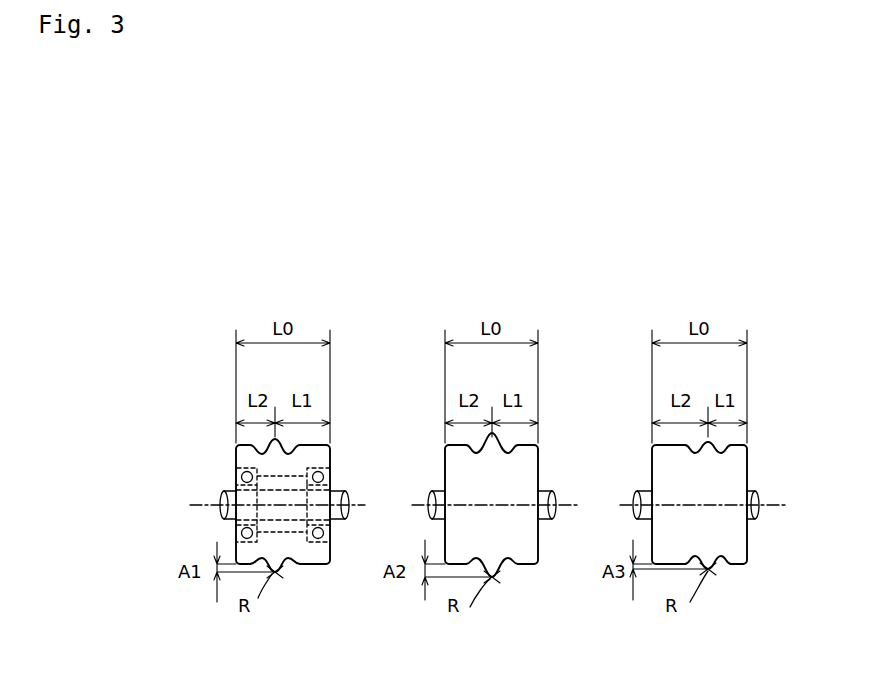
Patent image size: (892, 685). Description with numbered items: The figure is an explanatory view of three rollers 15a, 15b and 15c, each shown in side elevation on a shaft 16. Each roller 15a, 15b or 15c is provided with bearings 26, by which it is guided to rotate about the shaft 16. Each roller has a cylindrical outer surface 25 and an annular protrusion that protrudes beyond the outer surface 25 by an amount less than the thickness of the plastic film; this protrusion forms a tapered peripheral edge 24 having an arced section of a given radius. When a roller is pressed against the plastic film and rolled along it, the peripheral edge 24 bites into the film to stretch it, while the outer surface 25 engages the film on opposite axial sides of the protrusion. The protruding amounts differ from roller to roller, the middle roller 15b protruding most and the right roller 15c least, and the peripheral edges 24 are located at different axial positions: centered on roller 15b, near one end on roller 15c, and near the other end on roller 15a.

The roller 15a is at (247, 458).
The roller 15b is at (527, 470).
The roller 15c is at (732, 470).
The shaft 16 is at (232, 489).
The bearings 26 is at (331, 474).
The tapered peripheral edge 24 is at (283, 568).
The cylindrical outer surface 25 is at (315, 565).